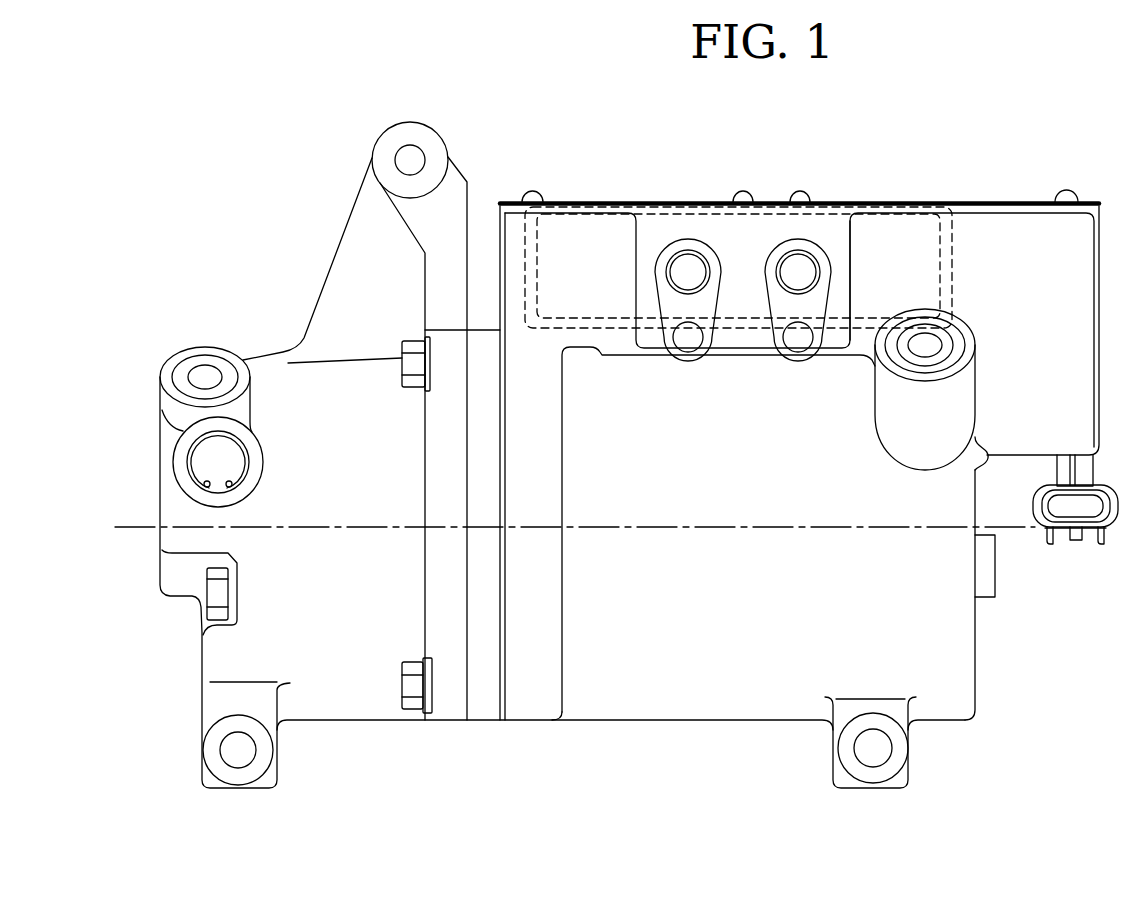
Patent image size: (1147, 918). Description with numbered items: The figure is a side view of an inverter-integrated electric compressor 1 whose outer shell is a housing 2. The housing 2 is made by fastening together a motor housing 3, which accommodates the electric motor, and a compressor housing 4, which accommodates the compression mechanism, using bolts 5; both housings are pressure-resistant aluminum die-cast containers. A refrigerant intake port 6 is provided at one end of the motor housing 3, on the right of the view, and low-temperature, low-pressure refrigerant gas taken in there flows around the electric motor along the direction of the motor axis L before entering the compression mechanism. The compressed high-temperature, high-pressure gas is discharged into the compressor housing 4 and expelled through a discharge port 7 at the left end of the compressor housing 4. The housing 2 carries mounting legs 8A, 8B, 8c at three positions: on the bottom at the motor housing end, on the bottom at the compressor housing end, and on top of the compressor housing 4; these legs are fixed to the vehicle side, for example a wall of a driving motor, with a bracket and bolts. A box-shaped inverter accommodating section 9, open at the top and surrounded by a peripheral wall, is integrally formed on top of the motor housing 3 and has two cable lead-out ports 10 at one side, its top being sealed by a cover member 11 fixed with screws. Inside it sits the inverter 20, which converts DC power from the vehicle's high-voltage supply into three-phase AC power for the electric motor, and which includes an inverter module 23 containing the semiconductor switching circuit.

The inverter-integrated electric compressor 1 is at (1012, 172).
The housing 2 is at (617, 728).
The motor housing 3 is at (948, 650).
The compressor housing 4 is at (248, 655).
The bolts 5 is at (417, 697).
The refrigerant intake port 6 is at (927, 342).
The discharge port 7 is at (205, 370).
The mounting leg 8A is at (873, 747).
The mounting leg 8B is at (238, 748).
The mounting leg 8c is at (422, 135).
The inverter accommodating section 9 is at (927, 228).
The cable lead-out ports 10 is at (687, 257).
The cover member 11 is at (590, 202).
The inverter 20 is at (763, 200).
The inverter module 23 is at (940, 278).
The motor axis L is at (773, 525).